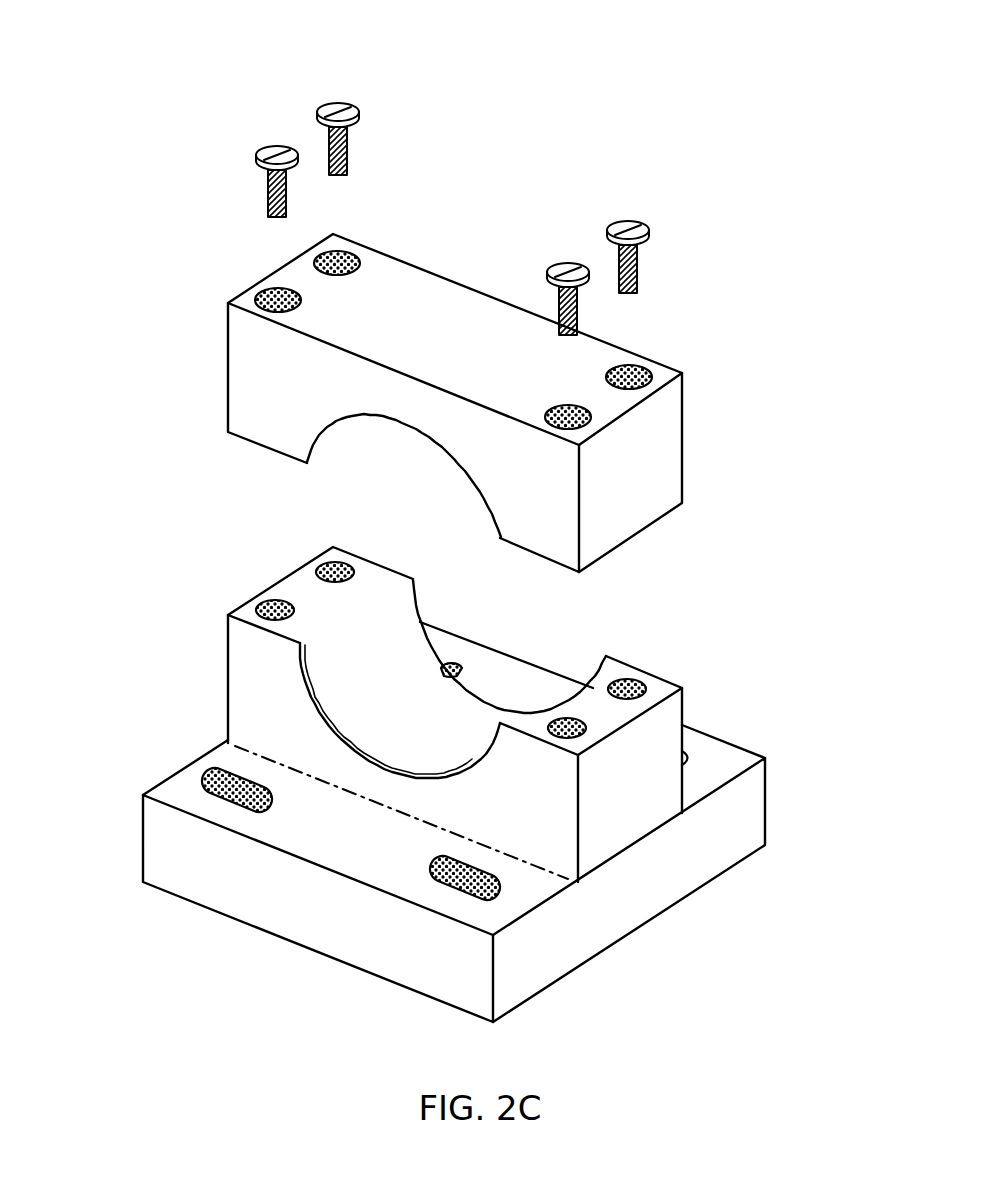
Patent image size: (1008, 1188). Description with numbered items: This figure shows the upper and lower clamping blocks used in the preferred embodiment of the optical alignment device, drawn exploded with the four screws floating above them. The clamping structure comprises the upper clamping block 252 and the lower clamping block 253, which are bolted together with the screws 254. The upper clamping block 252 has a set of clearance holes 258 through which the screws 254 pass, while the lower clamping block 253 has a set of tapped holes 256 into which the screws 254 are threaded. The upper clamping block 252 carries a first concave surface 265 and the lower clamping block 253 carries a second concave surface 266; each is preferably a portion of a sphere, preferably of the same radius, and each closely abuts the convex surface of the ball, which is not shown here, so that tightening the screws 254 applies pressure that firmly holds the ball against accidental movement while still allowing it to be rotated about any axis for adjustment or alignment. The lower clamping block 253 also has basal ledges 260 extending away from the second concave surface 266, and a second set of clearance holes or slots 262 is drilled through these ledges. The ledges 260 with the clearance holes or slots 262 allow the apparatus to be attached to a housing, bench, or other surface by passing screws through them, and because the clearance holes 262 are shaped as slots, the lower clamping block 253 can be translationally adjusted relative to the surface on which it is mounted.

The upper clamping block 252 is at (228, 373).
The lower clamping block 253 is at (228, 688).
The screws 254 is at (262, 143).
The tapped holes 256 is at (333, 570).
The clearance holes 258 is at (276, 296).
The basal ledges 260 is at (340, 830).
The clearance holes or slots 262 is at (230, 780).
The first concave surface 265 is at (416, 456).
The second concave surface 266 is at (387, 613).